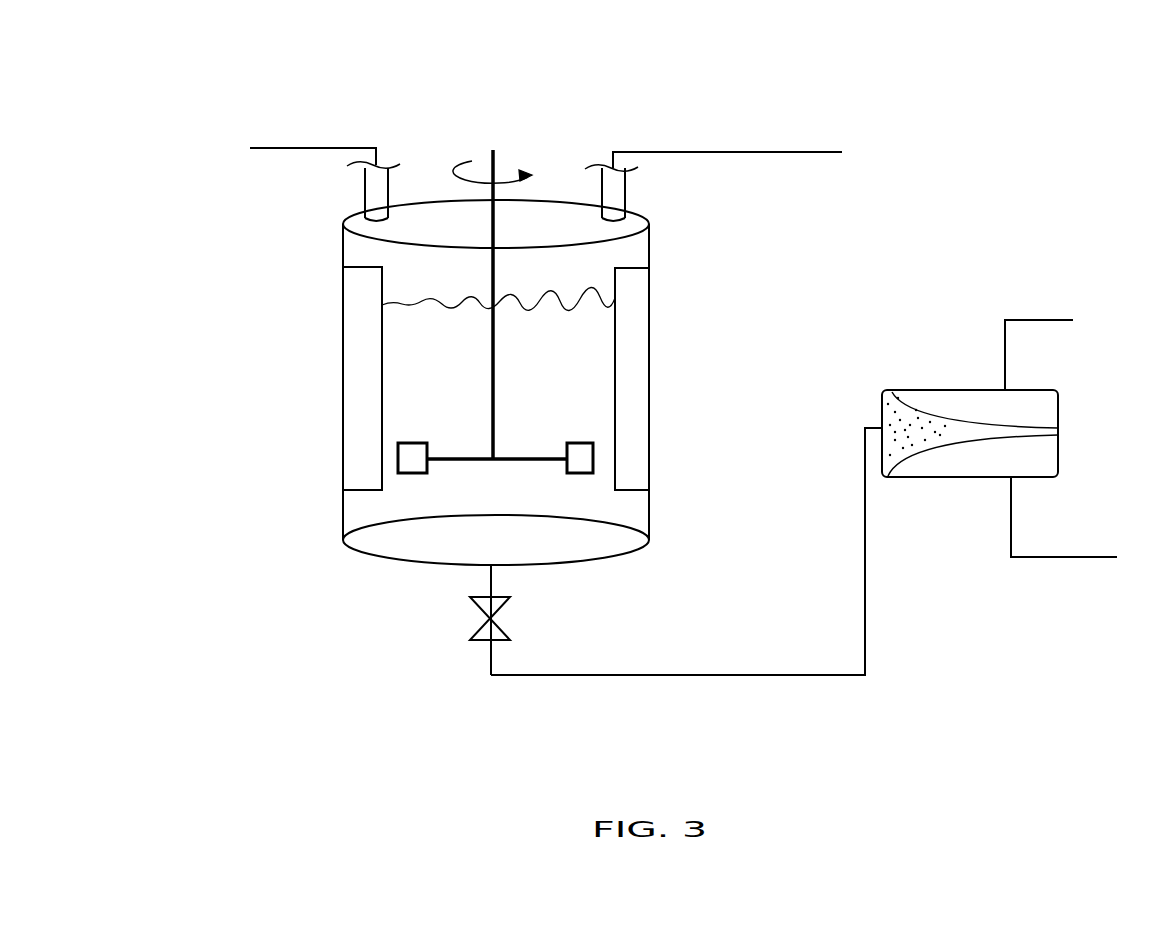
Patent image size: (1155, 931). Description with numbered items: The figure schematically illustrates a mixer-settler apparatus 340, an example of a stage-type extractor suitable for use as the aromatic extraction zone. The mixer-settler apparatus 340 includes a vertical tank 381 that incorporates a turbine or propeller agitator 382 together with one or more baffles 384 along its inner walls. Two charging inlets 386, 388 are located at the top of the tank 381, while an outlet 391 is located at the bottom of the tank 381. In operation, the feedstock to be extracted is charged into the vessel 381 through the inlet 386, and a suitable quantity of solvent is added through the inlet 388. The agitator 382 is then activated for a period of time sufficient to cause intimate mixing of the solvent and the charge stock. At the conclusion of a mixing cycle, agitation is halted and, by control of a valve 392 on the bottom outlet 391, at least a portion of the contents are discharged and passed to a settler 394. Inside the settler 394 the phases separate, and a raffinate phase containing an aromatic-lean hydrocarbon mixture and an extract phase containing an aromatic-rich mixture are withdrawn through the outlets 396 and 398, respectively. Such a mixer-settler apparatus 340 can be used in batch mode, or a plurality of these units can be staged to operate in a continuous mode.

The mixer-settler apparatus 340 is at (297, 80).
The vertical tank 381 is at (507, 550).
The agitator 382 is at (528, 455).
The baffles 384 is at (342, 398).
The charging inlet 386 is at (713, 173).
The charging inlet 388 is at (325, 173).
The outlet 391 is at (490, 583).
The valve 392 is at (482, 609).
The settler 394 is at (998, 473).
The outlet 396 is at (1064, 535).
The outlet 398 is at (1039, 338).